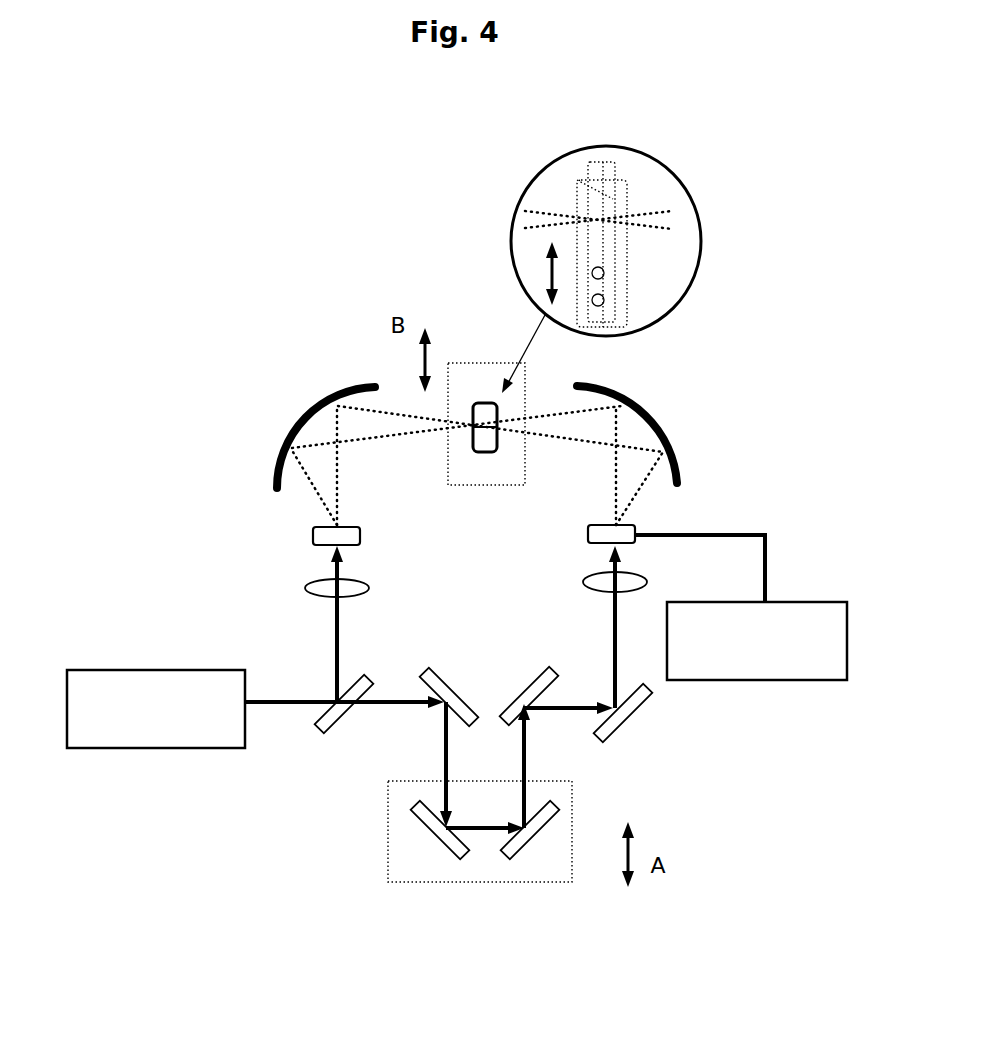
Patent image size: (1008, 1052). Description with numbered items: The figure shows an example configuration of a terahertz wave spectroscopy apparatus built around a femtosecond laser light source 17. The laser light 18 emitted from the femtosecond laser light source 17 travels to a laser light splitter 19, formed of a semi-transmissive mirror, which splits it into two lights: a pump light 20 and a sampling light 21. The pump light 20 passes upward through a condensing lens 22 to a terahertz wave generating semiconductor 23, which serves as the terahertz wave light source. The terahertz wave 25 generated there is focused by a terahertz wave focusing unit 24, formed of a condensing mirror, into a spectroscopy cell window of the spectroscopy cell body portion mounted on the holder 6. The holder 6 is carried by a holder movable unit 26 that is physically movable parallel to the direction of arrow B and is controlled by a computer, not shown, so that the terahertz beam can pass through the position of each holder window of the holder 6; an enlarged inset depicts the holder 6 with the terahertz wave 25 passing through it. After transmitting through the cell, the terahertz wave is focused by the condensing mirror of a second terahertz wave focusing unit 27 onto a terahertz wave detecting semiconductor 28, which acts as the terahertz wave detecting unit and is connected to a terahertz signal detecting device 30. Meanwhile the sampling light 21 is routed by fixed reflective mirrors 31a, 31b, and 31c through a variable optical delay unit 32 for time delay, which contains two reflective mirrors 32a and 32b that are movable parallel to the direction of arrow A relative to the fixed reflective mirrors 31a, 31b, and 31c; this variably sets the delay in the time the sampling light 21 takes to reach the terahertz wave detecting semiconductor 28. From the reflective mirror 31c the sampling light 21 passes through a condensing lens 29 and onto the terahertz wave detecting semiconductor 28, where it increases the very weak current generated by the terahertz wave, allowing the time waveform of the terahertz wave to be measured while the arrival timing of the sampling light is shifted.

The holder 6 is at (478, 455).
The femtosecond laser light source 17 is at (193, 670).
The light beam 18 is at (290, 700).
The laser light splitter 19 is at (312, 742).
The pump light 20 is at (328, 633).
The sampling light 21 is at (387, 710).
The condensing lens 22 is at (313, 583).
The terahertz wave generating semiconductor 23 is at (312, 537).
The terahertz wave focusing unit 24 is at (283, 437).
The terahertz wave 25 is at (370, 455).
The holder movable unit 26 is at (472, 363).
The terahertz wave focusing unit 27 is at (670, 455).
The terahertz wave detecting semiconductor 28 is at (645, 527).
The condensing lens 29 is at (582, 582).
The terahertz signal detecting device 30 is at (790, 600).
The reflective mirror 31a is at (452, 667).
The reflective mirror 31b is at (527, 667).
The reflective mirror 31c is at (633, 730).
The variable optical delay unit for time delay 32 is at (480, 849).
The reflective mirror 32a is at (427, 843).
The reflective mirror 32b is at (567, 797).